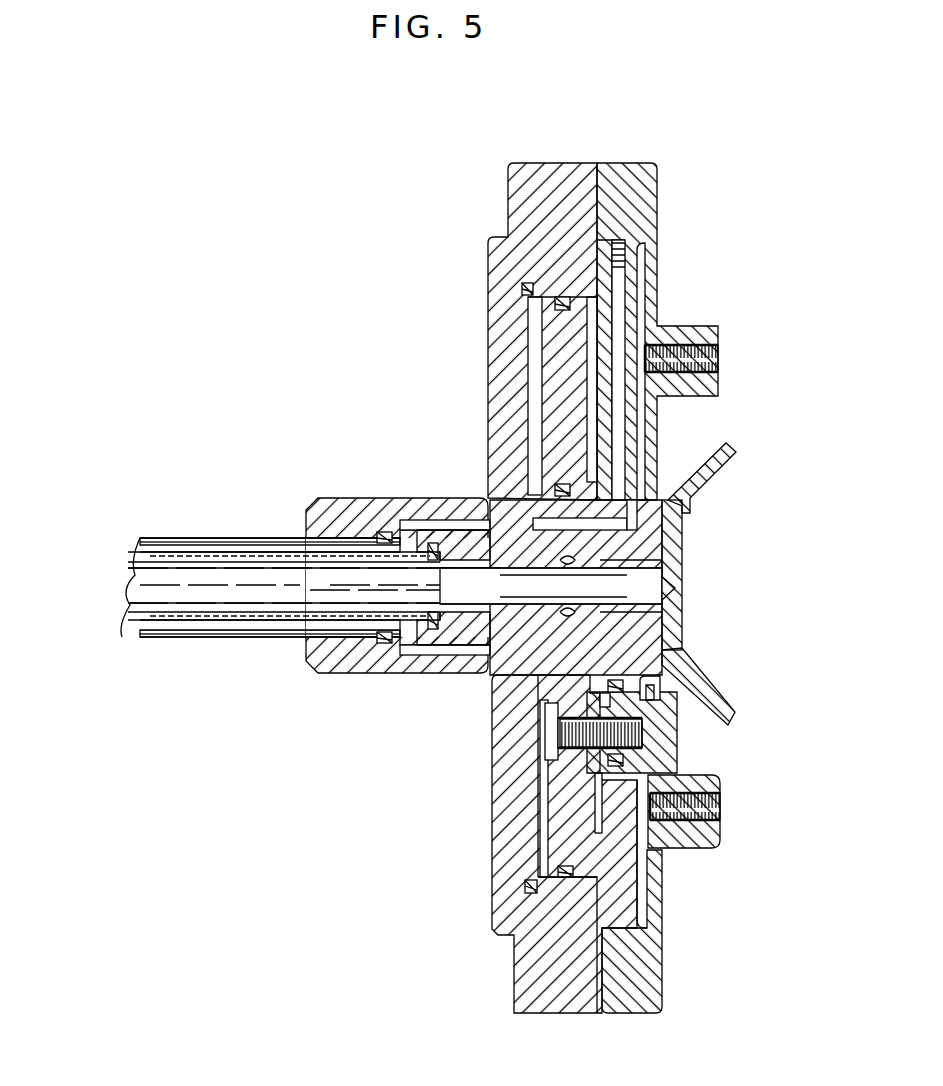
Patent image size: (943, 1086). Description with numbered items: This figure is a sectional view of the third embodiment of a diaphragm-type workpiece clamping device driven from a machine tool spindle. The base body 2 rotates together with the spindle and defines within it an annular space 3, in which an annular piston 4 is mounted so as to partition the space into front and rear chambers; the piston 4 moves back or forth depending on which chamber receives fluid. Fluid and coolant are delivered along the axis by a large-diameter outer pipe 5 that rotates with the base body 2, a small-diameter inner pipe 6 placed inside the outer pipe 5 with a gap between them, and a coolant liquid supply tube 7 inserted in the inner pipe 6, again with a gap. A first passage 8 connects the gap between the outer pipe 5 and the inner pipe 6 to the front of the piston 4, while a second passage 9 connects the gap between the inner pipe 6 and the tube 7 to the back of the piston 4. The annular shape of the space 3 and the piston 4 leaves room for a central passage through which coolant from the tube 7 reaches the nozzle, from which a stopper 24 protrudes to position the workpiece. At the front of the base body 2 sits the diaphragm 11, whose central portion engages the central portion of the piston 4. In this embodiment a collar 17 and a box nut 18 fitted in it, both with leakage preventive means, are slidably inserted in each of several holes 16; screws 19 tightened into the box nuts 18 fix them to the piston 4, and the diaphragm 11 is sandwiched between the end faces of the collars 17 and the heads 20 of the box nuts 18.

The base body 2 is at (503, 247).
The space 3 is at (535, 812).
The piston 4 is at (560, 850).
The outer pipe 5 is at (198, 538).
The inner pipe 6 is at (133, 558).
The coolant liquid supply tube 7 is at (170, 580).
The first passage 8 is at (620, 500).
The second passage 9 is at (540, 556).
The diaphragm 11 is at (653, 257).
The holes 16 is at (668, 847).
The collar 17 is at (608, 768).
The box nut 18 is at (678, 737).
The screws 19 is at (565, 737).
The heads 20 is at (677, 702).
The stopper 24 is at (733, 450).